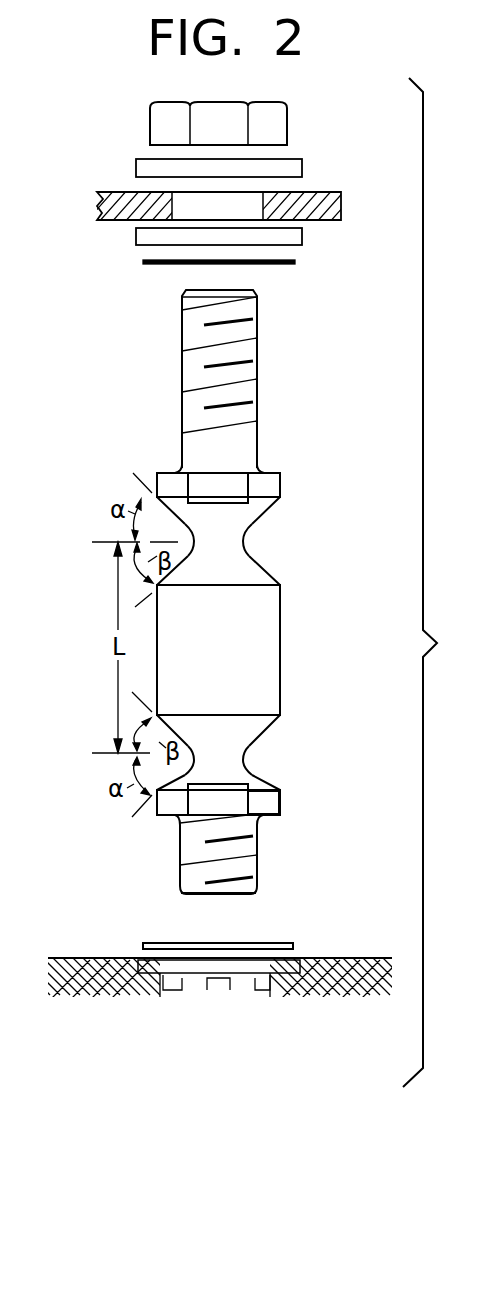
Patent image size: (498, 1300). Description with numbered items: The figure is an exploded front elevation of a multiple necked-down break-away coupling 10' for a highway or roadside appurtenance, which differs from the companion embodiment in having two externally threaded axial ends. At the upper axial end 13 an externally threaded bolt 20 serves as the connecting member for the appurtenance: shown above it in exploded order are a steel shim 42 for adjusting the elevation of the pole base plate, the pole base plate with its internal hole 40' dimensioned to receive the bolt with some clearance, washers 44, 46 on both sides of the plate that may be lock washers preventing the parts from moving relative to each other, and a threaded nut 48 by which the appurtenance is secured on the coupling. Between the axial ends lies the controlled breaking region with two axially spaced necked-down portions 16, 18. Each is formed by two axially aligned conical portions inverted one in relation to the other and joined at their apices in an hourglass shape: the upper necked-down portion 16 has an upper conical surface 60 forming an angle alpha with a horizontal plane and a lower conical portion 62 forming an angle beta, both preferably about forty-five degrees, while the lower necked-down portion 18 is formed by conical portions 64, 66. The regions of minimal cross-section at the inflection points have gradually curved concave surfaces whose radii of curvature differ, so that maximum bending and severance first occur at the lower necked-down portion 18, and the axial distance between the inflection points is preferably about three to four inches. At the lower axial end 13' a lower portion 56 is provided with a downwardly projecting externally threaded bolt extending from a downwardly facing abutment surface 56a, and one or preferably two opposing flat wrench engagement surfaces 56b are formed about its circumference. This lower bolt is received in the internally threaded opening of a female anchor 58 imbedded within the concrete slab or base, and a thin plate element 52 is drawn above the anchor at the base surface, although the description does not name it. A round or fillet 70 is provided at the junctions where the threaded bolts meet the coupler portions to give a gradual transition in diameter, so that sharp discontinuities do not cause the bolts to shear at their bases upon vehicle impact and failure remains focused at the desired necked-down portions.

The coupling 10' is at (177, 598).
The upper axial end 13 is at (153, 370).
The lower axial end 13' is at (174, 869).
The upper necked-down portion 16 is at (110, 528).
The lower necked-down portion 18 is at (100, 767).
The externally threaded bolt 20 is at (152, 293).
The internal hole 40' is at (234, 187).
The steel shim 42 is at (295, 262).
The washer 44 is at (134, 235).
The washer 46 is at (300, 165).
The threaded nut 48 is at (281, 124).
The bearing plate 52 is at (293, 946).
The lower portion 56 is at (224, 839).
The downwardly facing abutment surface 56a is at (276, 817).
The flat wrench engagement surfaces 56b is at (203, 807).
The female anchor 58 is at (230, 985).
The upper conical portion 60 is at (266, 512).
The lower conical portion 62 is at (249, 543).
The conical portion 64 is at (276, 736).
The conical portion 66 is at (272, 778).
The fillet 70 is at (260, 467).